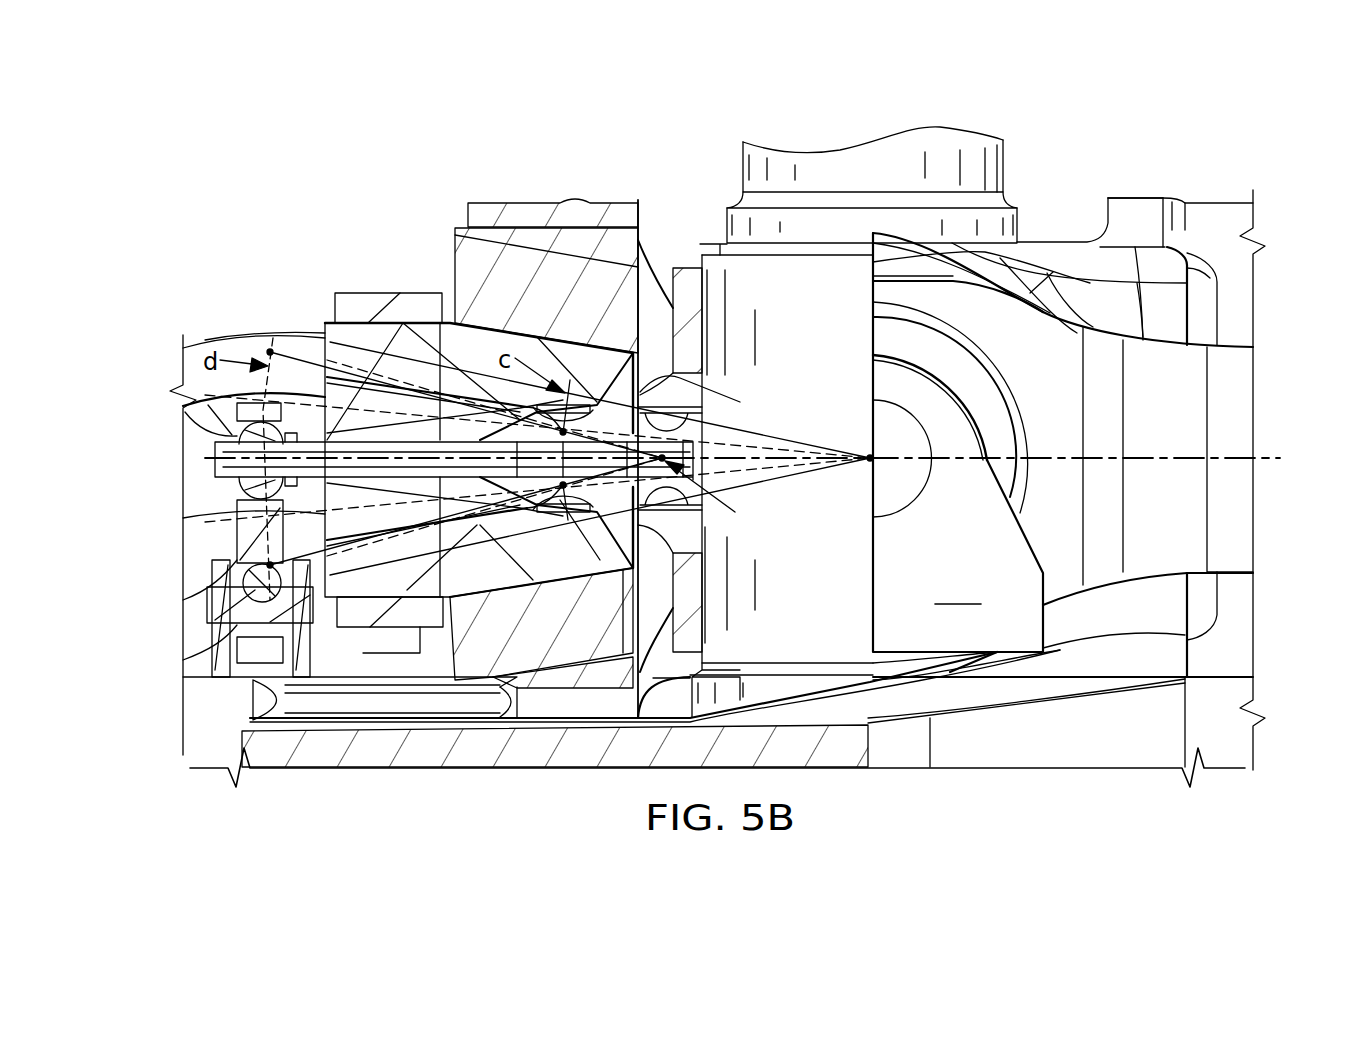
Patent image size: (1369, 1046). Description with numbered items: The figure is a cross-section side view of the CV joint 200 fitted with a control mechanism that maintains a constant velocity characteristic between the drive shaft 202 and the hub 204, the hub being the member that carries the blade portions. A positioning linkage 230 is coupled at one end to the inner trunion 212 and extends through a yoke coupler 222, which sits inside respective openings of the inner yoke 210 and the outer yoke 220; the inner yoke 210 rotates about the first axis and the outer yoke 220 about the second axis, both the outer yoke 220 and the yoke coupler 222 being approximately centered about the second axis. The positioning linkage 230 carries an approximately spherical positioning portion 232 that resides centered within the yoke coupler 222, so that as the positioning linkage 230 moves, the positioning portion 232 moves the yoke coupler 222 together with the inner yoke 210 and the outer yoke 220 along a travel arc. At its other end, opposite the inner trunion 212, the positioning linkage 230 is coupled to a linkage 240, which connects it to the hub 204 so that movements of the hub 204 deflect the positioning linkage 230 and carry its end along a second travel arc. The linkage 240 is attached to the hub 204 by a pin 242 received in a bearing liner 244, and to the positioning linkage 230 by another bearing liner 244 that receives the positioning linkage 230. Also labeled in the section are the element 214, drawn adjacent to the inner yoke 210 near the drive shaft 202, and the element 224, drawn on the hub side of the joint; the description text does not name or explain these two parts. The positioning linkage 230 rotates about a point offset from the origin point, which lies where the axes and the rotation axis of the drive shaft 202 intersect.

The CV joint 200 is at (1108, 152).
The drive shaft 202 is at (938, 128).
The hub 204 is at (472, 768).
The inner yoke 210 is at (608, 205).
The inner trunion 212 is at (687, 270).
The nut 214 is at (468, 255).
The outer yoke 220 is at (1256, 406).
The yoke coupler 222 is at (318, 346).
The impeller hub 224 is at (958, 448).
The positioning linkage 230 is at (217, 472).
The positioning portion 232 is at (730, 372).
The linkage 240 is at (240, 532).
The pin 242 is at (213, 606).
The bearing liner 244 is at (237, 415).